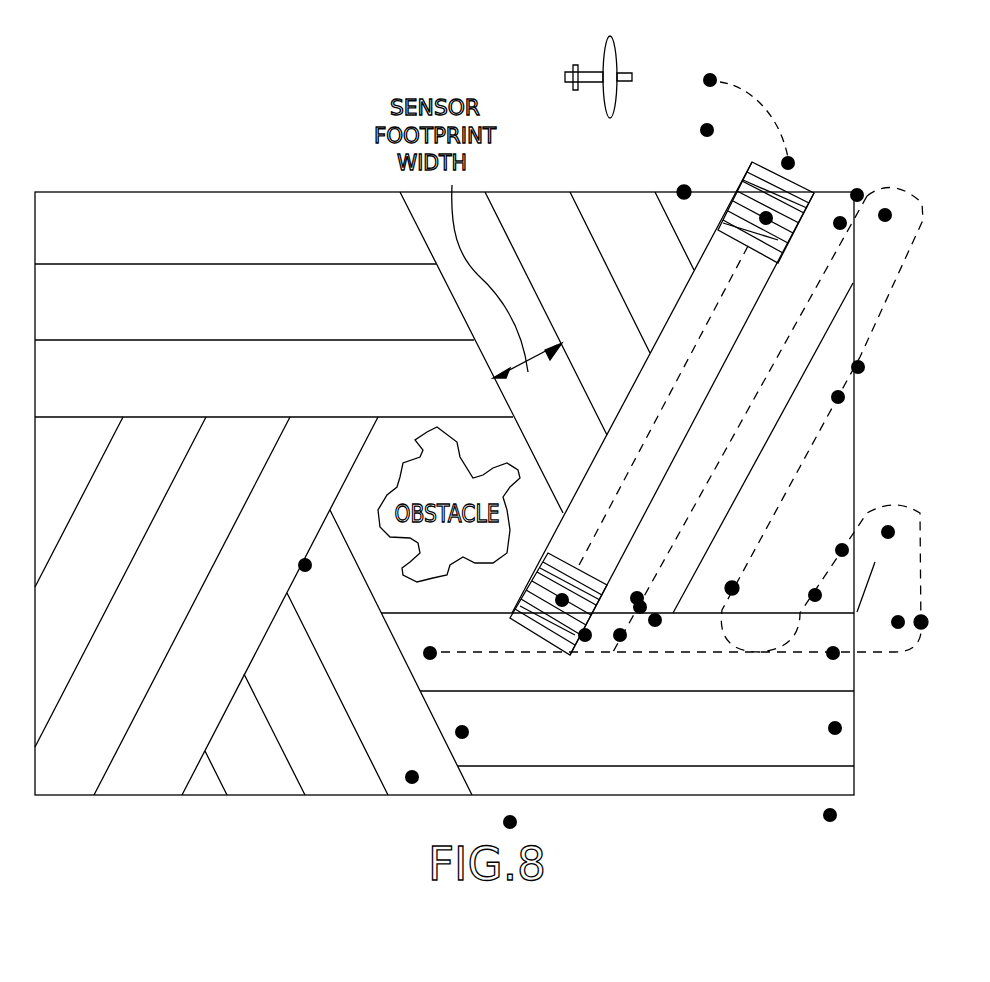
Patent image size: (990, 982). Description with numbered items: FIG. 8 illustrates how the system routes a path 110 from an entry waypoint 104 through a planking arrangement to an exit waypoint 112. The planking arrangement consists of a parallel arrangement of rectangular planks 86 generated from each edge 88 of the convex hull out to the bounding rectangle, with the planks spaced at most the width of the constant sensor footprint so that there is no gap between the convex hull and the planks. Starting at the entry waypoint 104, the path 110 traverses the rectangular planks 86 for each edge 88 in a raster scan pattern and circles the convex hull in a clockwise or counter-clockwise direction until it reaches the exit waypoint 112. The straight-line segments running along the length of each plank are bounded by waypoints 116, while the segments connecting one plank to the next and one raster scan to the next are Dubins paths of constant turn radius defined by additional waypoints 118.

The rectangular planks 86 is at (826, 472).
The edge of the convex hull 88 is at (532, 453).
The entry waypoint 104 is at (795, 163).
The path 110 is at (920, 202).
The exit waypoint 112 is at (680, 190).
The waypoints 116 is at (738, 588).
The additional waypoints 118 is at (926, 622).